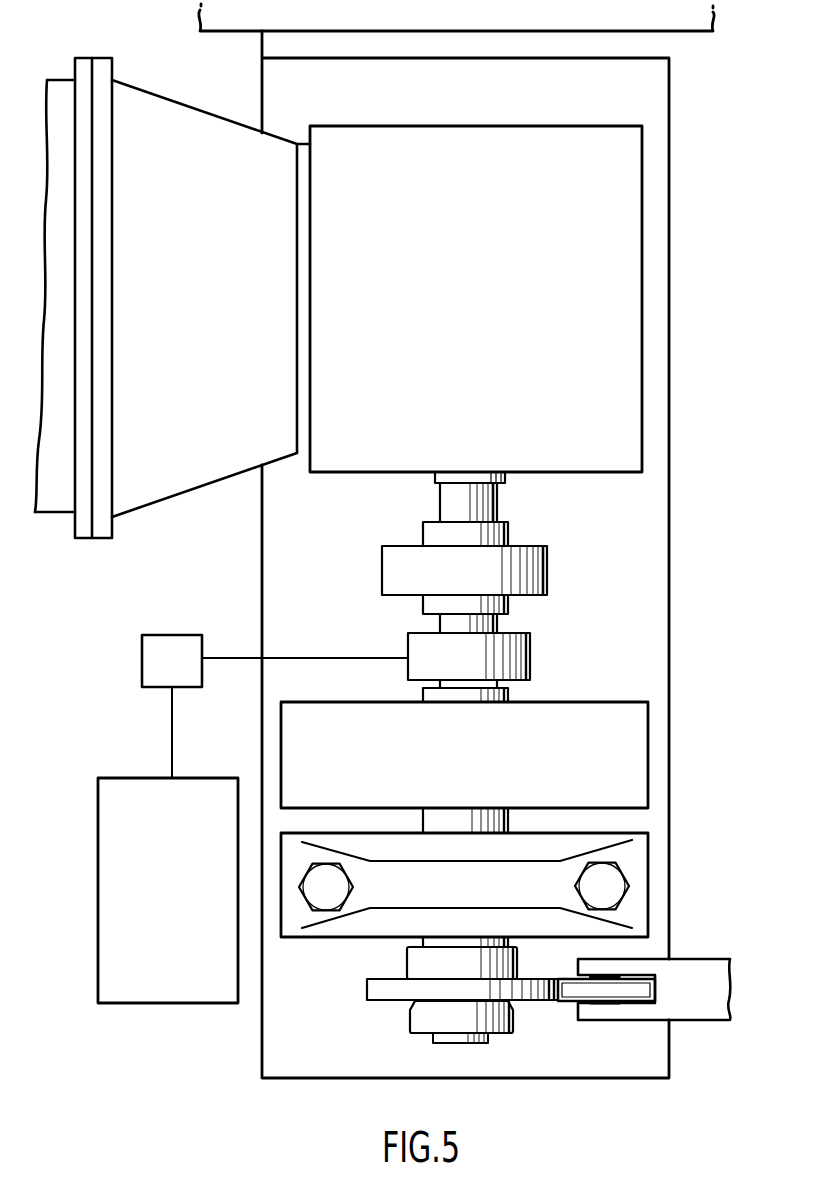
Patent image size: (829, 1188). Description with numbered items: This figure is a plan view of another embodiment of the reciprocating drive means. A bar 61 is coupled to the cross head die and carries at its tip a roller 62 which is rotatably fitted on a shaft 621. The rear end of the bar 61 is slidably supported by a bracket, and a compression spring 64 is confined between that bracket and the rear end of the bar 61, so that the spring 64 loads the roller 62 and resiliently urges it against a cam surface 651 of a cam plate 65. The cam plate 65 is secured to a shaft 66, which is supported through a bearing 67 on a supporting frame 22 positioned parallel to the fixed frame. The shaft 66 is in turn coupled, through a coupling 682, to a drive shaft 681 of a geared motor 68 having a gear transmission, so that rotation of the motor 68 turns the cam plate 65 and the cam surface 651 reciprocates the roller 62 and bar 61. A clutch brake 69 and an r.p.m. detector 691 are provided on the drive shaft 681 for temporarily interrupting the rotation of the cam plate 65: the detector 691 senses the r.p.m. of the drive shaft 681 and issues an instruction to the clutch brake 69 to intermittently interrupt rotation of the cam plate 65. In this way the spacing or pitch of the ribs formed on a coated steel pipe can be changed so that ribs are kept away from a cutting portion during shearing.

The supporting frame 22 is at (662, 513).
The bar 61 is at (720, 960).
The roller 62 is at (640, 983).
The shaft 621 is at (605, 1004).
The compression spring 64 is at (607, 700).
The cam plate 65 is at (364, 1009).
The cam surface 651 is at (367, 990).
The shaft 66 is at (490, 1035).
The bearing 67 is at (640, 847).
The geared motor 68 is at (633, 327).
The drive shaft 681 is at (500, 507).
The coupling 682 is at (549, 568).
The clutch brake 69 is at (168, 645).
The r.p.m. detector 691 is at (186, 910).